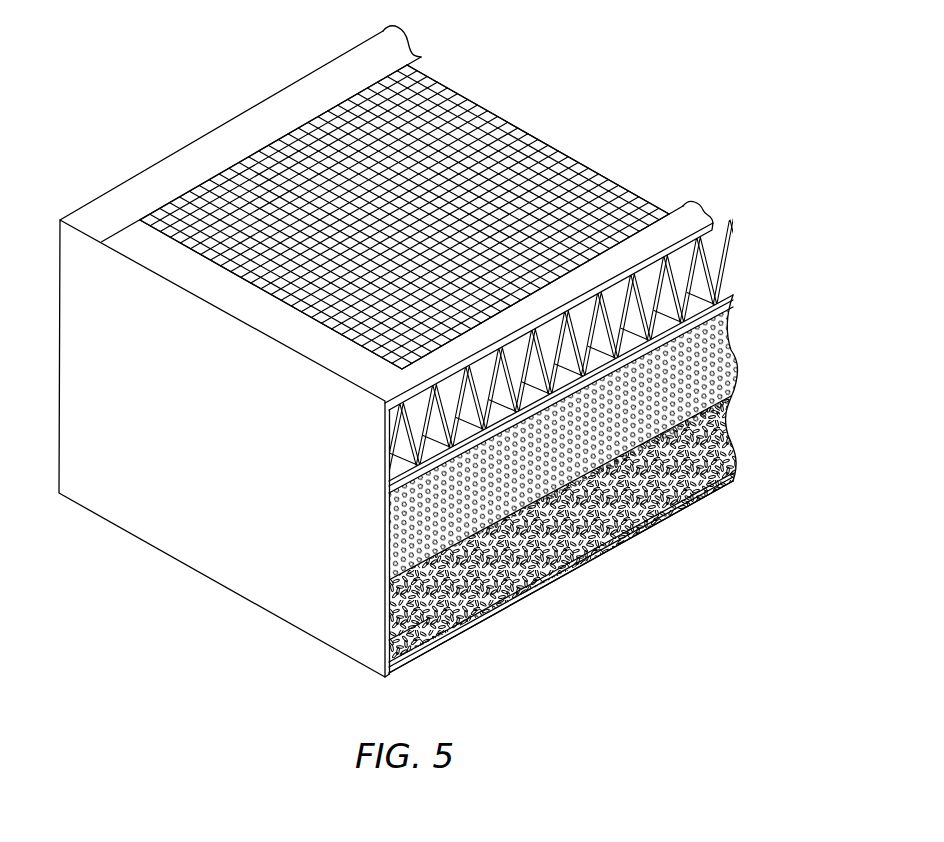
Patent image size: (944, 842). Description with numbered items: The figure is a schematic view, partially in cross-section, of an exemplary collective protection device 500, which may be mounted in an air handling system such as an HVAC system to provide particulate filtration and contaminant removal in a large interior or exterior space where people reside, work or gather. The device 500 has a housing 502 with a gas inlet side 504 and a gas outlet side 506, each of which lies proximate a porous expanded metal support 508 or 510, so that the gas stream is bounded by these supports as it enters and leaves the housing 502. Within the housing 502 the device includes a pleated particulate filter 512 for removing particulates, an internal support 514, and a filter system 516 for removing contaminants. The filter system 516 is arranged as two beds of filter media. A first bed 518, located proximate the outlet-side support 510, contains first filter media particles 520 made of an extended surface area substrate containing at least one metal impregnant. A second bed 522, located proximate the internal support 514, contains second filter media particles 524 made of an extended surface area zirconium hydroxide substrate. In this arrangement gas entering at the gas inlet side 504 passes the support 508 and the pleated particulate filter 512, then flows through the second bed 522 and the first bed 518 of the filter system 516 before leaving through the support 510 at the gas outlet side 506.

The collective protection device 500 is at (505, 55).
The housing 502 is at (299, 78).
The gas inlet side 504 is at (564, 184).
The gas outlet side 506 is at (455, 652).
The porous expanded metal support 508 is at (528, 147).
The porous expanded metal support 510 is at (538, 585).
The pleated particulate filter 512 is at (712, 259).
The internal support 514 is at (735, 298).
The filter system 516 is at (560, 478).
The first bed 518 is at (652, 510).
The first filter media particles 520 is at (400, 625).
The second bed 522 is at (713, 481).
The second filter media particles 524 is at (400, 545).